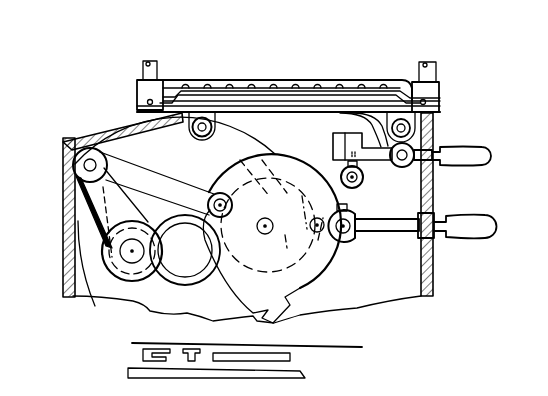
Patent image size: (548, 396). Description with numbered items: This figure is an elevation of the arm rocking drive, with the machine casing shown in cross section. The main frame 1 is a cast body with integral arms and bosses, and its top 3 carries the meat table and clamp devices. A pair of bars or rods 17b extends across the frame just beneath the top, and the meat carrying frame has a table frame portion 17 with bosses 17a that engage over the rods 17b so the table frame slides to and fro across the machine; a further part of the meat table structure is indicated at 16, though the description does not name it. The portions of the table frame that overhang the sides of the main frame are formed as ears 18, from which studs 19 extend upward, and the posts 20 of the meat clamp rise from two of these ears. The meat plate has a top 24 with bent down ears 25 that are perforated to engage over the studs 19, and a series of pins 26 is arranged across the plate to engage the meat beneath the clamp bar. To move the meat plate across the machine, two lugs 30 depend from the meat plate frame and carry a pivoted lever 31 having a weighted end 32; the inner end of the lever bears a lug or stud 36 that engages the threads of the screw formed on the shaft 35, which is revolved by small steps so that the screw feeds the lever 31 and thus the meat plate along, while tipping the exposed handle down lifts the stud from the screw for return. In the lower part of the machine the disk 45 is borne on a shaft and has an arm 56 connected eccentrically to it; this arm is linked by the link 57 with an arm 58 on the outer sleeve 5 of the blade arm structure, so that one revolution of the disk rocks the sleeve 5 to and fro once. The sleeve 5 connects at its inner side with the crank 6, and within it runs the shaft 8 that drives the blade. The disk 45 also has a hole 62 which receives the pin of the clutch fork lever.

The main frame 1 is at (434, 274).
The top of the frame 3 is at (140, 112).
The sleeve 5 is at (113, 257).
The crank 6 is at (245, 361).
The shaft 8 is at (130, 254).
The rail inner member 16 is at (187, 98).
The table frame portion 17 is at (329, 113).
The bosses 17a is at (213, 124).
The bars or rods 17b is at (218, 132).
The ears 18 is at (441, 111).
The studs 19 is at (427, 97).
The posts 20 is at (151, 62).
The top 24 is at (301, 99).
The bent down ears 25 is at (165, 98).
The pins 26 is at (231, 83).
The lugs 30 is at (347, 124).
The lever 31 is at (463, 155).
The weighted end 32 is at (336, 146).
The shaft 35 is at (363, 181).
The lug or stud 36 is at (348, 166).
The disk 45 is at (327, 262).
The arm 56 is at (213, 184).
The link 57 is at (197, 172).
The arm 58 is at (73, 203).
The hole 62 is at (326, 232).